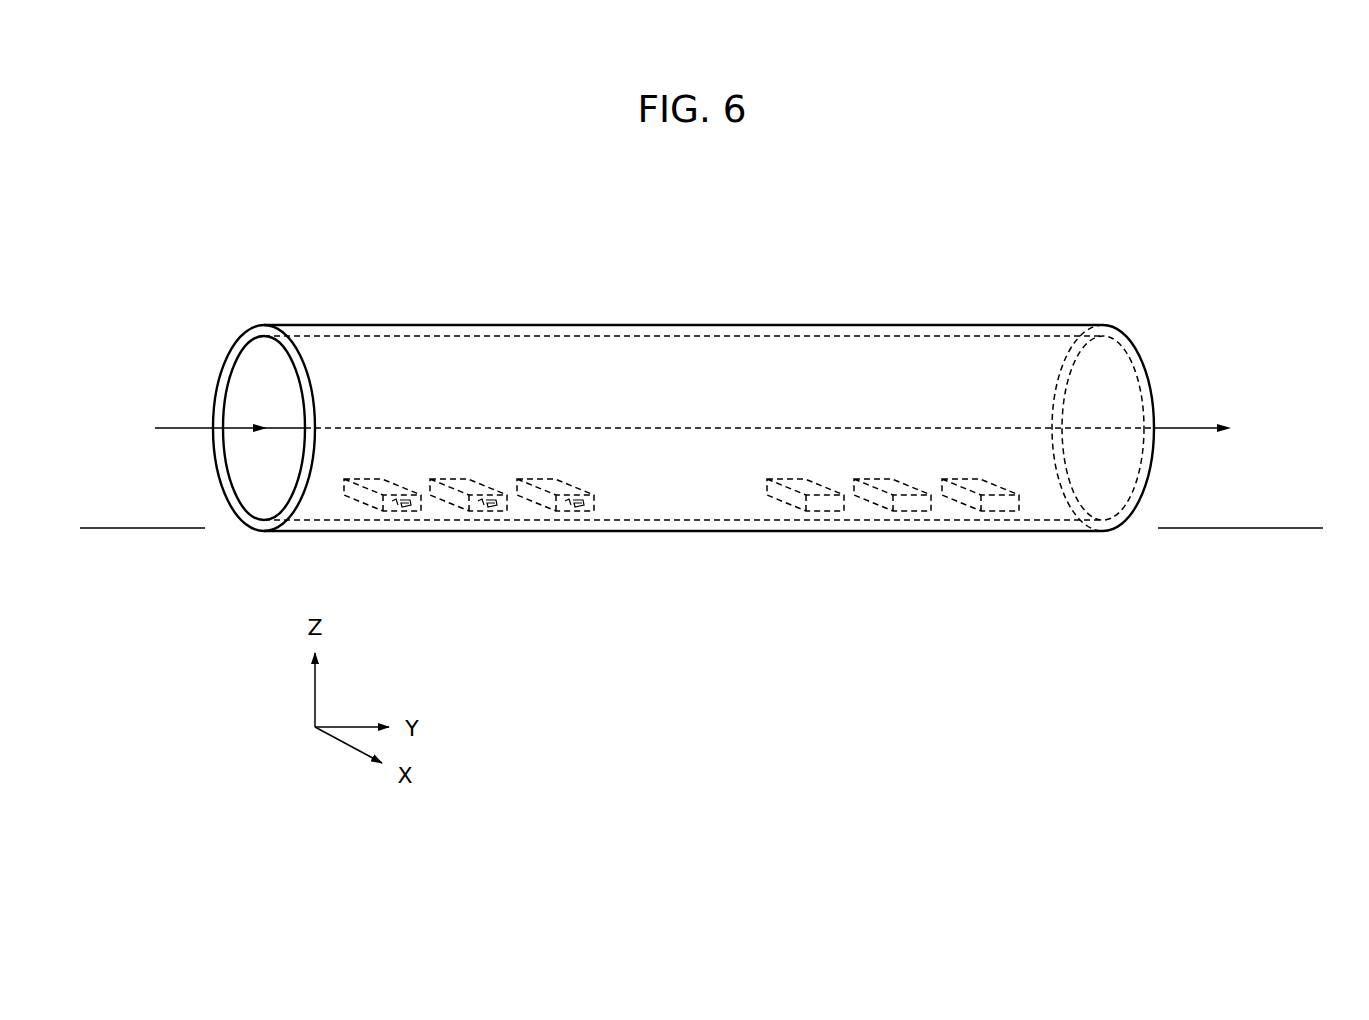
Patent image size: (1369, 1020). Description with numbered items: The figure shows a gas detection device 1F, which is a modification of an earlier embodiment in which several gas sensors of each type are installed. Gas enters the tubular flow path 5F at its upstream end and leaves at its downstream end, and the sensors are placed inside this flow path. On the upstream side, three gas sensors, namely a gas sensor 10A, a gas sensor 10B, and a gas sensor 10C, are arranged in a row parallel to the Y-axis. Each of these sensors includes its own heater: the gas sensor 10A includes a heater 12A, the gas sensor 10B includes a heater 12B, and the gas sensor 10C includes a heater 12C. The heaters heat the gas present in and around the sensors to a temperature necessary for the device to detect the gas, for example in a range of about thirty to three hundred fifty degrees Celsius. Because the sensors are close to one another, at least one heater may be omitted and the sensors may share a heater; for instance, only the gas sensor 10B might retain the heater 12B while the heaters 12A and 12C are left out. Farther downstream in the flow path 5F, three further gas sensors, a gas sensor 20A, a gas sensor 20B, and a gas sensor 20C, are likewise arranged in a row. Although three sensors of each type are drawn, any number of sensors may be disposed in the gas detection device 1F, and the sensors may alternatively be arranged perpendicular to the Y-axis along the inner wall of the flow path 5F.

The gas detection device 1F is at (643, 289).
The flow path 5F is at (911, 325).
The gas sensor 10A is at (387, 480).
The gas sensor 10B is at (474, 480).
The gas sensor 10C is at (561, 480).
The heater 12A is at (403, 513).
The heater 12B is at (490, 513).
The heater 12C is at (576, 513).
The gas sensor 20A is at (802, 480).
The gas sensor 20B is at (889, 480).
The gas sensor 20C is at (974, 480).